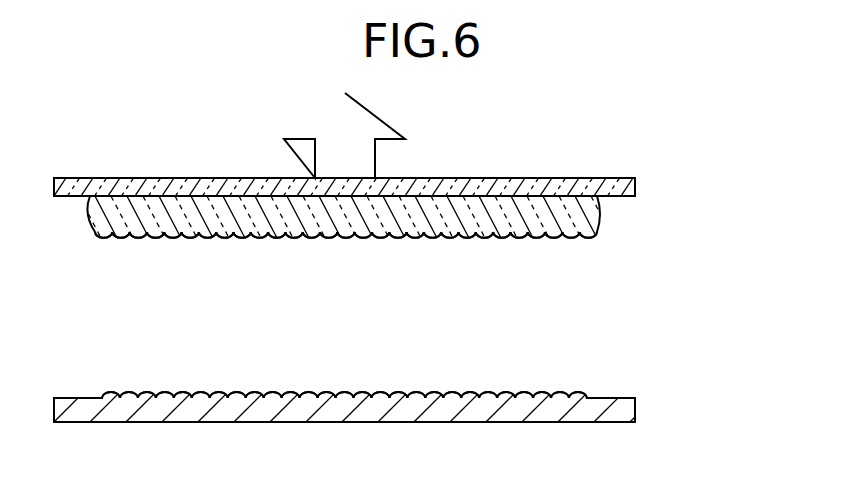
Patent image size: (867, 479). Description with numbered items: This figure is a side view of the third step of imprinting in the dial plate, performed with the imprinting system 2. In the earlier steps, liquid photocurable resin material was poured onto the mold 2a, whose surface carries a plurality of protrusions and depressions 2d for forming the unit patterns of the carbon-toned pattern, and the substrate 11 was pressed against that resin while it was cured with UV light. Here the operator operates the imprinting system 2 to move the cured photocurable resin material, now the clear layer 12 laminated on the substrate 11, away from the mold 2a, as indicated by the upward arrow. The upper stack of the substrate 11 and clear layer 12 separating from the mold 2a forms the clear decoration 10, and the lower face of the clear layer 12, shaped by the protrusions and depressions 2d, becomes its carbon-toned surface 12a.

The imprinting system 2 is at (406, 336).
The mold 2a is at (646, 408).
The protrusions and depressions 2d is at (420, 392).
The clear decoration 10 is at (412, 189).
The substrate 11 is at (645, 183).
The clear layer 12 is at (404, 217).
The carbon-toned surface 12a is at (315, 250).